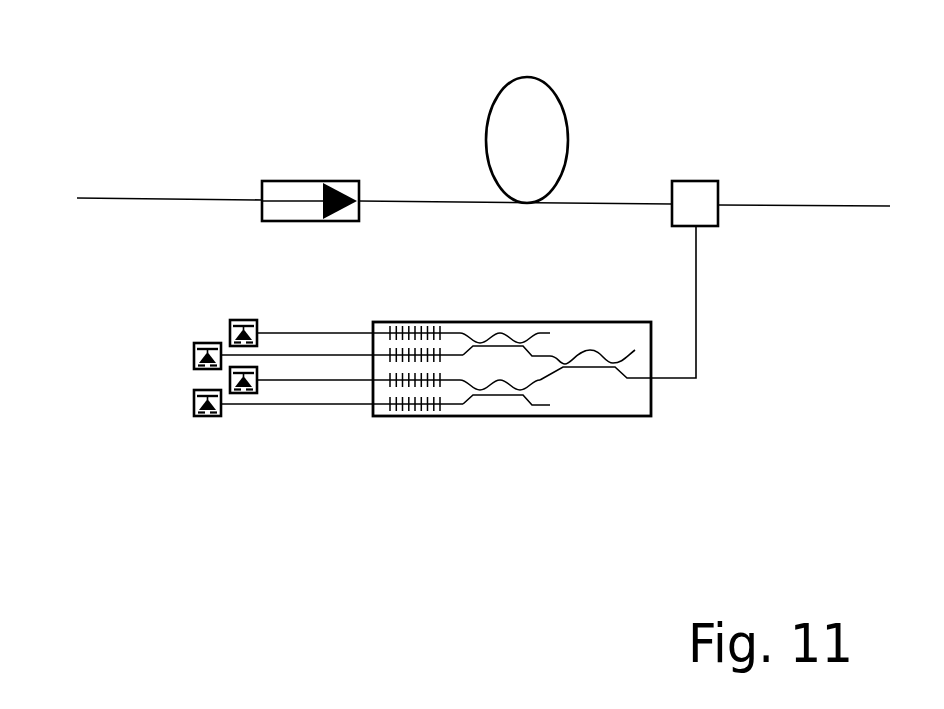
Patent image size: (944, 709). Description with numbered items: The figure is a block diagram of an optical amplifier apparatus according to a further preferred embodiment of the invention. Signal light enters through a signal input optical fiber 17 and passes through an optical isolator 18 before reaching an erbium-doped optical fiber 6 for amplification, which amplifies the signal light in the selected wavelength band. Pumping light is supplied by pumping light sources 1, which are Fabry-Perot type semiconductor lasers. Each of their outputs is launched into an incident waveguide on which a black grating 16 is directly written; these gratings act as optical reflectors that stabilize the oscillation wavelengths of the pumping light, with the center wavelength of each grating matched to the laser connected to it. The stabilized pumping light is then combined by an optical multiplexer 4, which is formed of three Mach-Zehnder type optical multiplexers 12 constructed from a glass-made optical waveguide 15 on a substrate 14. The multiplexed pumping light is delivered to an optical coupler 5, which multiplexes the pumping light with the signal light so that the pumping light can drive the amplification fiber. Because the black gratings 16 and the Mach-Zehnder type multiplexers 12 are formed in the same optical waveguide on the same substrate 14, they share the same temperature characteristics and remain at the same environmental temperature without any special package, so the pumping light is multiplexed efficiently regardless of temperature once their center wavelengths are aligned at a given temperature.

The pumping light source 1 is at (192, 420).
The optical multiplexer 4 is at (447, 413).
The optical coupler 5 is at (692, 181).
The erbium-doped optical fiber 6 is at (562, 100).
The Mach-Zehnder type optical multiplexer 12 is at (452, 320).
The substrate 14 is at (651, 392).
The optical waveguide 15 is at (573, 365).
The black grating 16 is at (395, 325).
The signal input optical fiber 17 is at (155, 198).
The optical isolator 18 is at (310, 182).